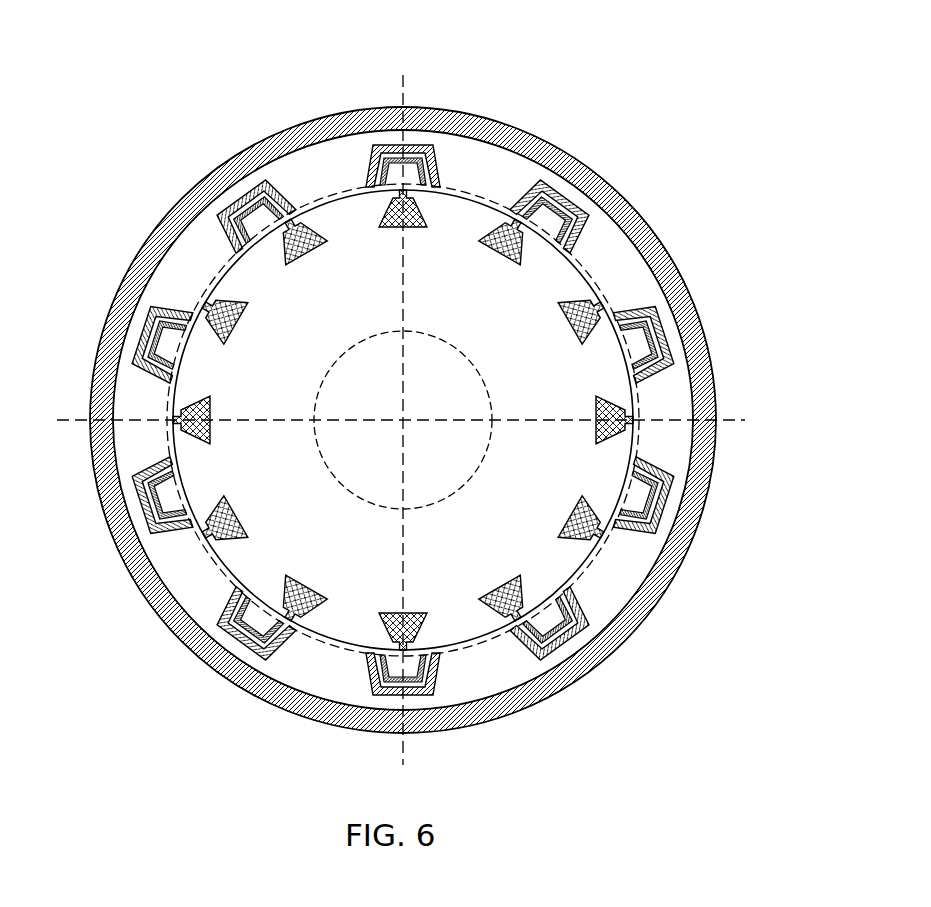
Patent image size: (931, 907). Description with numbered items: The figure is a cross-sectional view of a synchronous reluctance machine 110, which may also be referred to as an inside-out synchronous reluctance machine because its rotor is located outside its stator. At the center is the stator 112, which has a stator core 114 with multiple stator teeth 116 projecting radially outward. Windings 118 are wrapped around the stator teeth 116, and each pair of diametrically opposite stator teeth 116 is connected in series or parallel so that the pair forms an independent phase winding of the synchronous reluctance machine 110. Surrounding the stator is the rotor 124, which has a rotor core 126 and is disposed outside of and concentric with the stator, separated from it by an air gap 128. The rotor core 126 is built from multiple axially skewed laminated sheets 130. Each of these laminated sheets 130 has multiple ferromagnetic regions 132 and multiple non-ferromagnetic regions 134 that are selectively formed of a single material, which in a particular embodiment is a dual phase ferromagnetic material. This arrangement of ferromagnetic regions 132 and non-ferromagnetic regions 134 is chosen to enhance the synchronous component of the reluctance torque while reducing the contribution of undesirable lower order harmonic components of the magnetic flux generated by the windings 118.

The synchronous reluctance machine 110 is at (652, 39).
The stator 112 is at (598, 284).
The stator core 114 is at (540, 562).
The stator teeth 116 is at (335, 222).
The windings 118 is at (318, 245).
The rotor 124 is at (487, 200).
The rotor core 126 is at (630, 262).
The air gap 128 is at (343, 647).
The axially skewed laminated sheets 130 is at (485, 172).
The ferromagnetic regions 132 is at (563, 200).
The non-ferromagnetic regions 134 is at (583, 230).